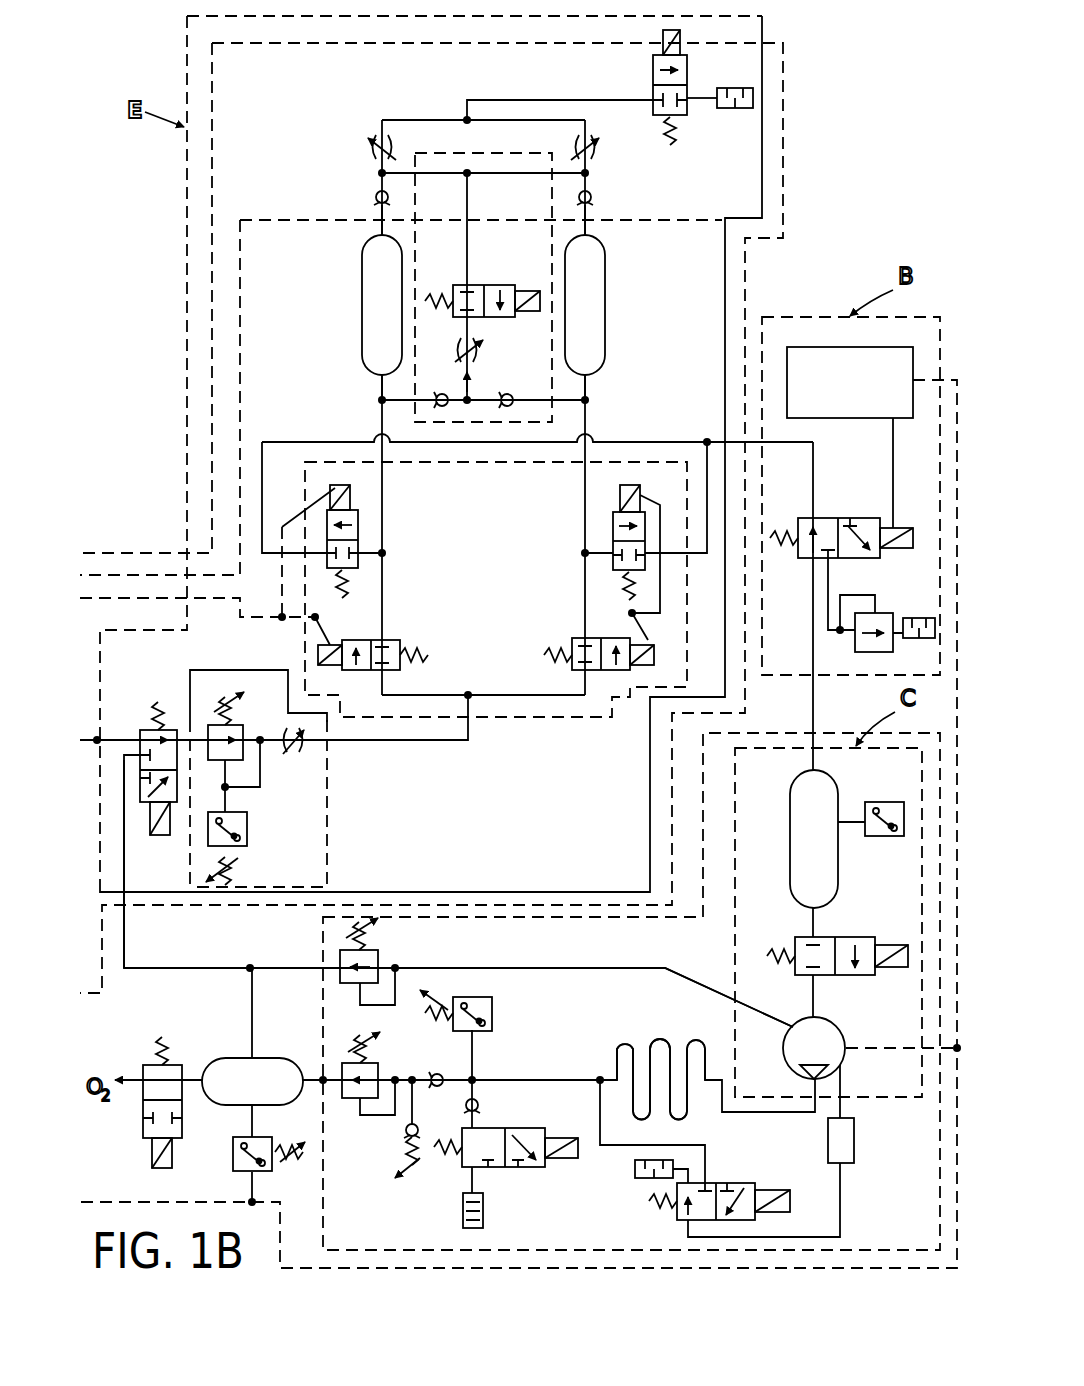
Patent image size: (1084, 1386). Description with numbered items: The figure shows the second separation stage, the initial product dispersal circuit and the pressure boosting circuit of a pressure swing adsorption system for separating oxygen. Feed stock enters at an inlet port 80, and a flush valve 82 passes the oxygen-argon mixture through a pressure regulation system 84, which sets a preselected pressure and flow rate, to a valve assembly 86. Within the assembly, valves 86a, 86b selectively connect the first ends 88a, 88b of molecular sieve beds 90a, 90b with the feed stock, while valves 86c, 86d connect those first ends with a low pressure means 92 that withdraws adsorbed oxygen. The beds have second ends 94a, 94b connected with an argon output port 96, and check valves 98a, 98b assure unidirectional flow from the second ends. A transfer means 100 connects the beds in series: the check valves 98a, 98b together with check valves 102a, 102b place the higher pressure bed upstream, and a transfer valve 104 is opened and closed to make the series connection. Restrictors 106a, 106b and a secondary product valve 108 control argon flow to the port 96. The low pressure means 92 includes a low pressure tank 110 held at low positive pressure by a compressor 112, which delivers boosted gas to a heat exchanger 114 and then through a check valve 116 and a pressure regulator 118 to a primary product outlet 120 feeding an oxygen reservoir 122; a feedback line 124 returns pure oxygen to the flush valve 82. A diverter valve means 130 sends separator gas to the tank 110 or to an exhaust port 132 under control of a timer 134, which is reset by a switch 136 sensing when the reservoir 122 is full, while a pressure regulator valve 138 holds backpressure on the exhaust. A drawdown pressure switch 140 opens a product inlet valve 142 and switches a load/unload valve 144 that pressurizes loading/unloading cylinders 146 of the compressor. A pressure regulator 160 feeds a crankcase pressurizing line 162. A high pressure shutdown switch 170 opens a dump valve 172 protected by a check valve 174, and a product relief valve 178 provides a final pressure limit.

The inlet port 80 is at (100, 740).
The flush valve 82 is at (178, 802).
The pressure regulation system 84 is at (328, 826).
The valve assembly 86 is at (522, 720).
The valve 86a is at (392, 638).
The valve 86b is at (584, 638).
The valve 86c is at (362, 522).
The valve 86d is at (612, 520).
The first end 88a is at (376, 380).
The first end 88b is at (604, 378).
The molecular sieve bed 90a is at (364, 288).
The molecular sieve bed 90b is at (604, 296).
The low pressure means 92 is at (733, 920).
The second end 94a is at (374, 236).
The second end 94b is at (596, 235).
The argon output port 96 is at (742, 78).
The check valve 98a is at (374, 200).
The check valve 98b is at (593, 198).
The transfer means 100 is at (472, 147).
The check valve 102a is at (436, 406).
The check valve 102b is at (500, 398).
The transfer valve 104 is at (462, 285).
The restrictor 106a is at (372, 158).
The restrictor 106b is at (596, 148).
The secondary product valve 108 is at (653, 62).
The low pressure tank 110 is at (828, 855).
The compressor 112 is at (826, 1026).
The heat exchanger 114 is at (688, 1115).
The check valve 116 is at (442, 1074).
The pressure regulator 118 is at (342, 1063).
The primary product outlet 120 is at (320, 1086).
The oxygen reservoir 122 is at (238, 1060).
The feedback line 124 is at (128, 925).
The valve means 130 is at (826, 518).
The exhaust port 132 is at (918, 618).
The timer 134 is at (872, 412).
The switch 136 is at (262, 1172).
The pressure regulator valve 138 is at (876, 612).
The suction tank drawdown pressure switch 140 is at (888, 802).
The product inlet valve 142 is at (845, 937).
The load/unload valve 144 is at (722, 1183).
The loading/unloading cylinders 146 is at (855, 1148).
The pressure regulator 160 is at (376, 950).
The crankcase pressurizing line 162 is at (545, 965).
The high pressure shutdown switch 170 is at (492, 1015).
The dump valve 172 is at (518, 1167).
The check valve 174 is at (482, 1105).
The product relief valve 178 is at (404, 1128).